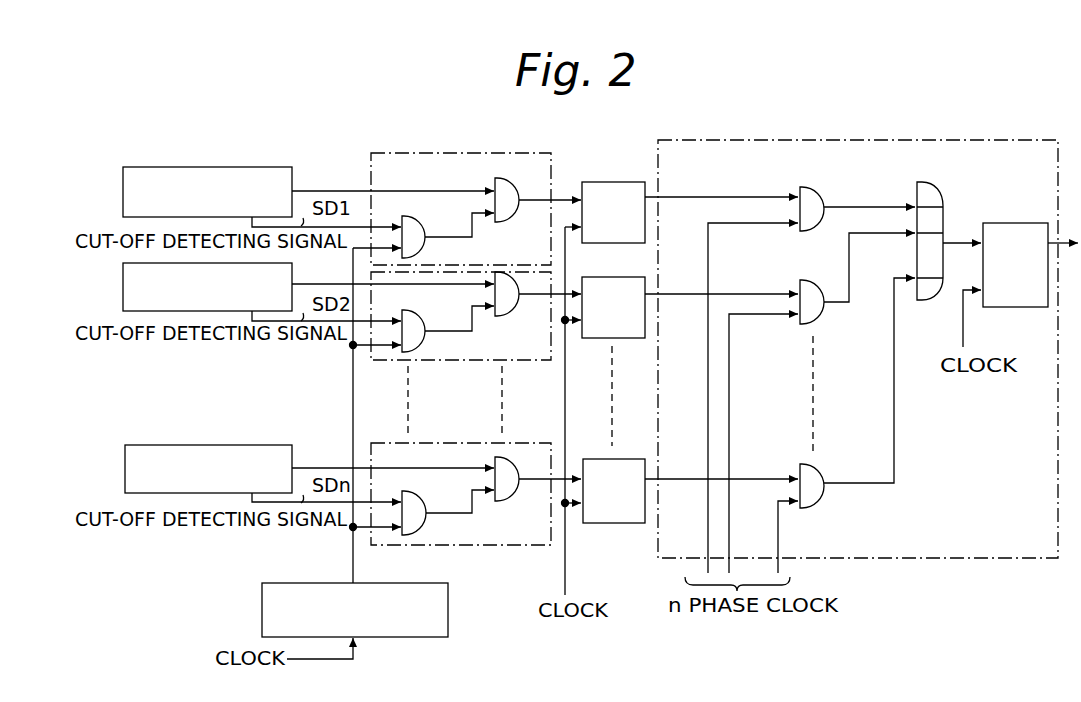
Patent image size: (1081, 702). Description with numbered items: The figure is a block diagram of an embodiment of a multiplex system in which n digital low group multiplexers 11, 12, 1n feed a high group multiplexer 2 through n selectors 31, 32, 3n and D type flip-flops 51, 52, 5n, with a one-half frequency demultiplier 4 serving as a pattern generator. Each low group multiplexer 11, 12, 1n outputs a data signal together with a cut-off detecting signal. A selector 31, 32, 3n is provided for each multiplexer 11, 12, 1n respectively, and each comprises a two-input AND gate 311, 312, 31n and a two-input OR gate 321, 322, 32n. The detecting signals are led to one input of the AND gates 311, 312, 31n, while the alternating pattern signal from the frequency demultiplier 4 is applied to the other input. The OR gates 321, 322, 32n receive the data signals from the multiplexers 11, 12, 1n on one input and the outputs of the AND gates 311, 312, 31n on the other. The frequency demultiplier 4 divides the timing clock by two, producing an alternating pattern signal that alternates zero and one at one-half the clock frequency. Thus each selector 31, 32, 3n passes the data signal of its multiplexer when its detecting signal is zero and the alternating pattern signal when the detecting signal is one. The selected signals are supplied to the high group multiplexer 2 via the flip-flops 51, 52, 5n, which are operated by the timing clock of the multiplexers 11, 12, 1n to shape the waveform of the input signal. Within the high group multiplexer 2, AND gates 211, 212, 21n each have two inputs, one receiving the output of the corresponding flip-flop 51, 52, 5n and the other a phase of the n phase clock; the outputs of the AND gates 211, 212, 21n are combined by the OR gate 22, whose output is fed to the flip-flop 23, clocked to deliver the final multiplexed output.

The high group multiplexer 2 is at (985, 140).
The ½ frequency demultiplier 4 is at (397, 583).
The digital low group multiplexer 11 is at (277, 167).
The digital low group multiplexer 12 is at (293, 276).
The digital low group multiplexer 1n is at (291, 445).
The selector 31 is at (492, 153).
The selector 32 is at (505, 362).
The selector 3n is at (512, 443).
The AND gate 311 is at (409, 218).
The AND gate 312 is at (410, 301).
The AND gate 31n is at (411, 494).
The OR gate 321 is at (490, 185).
The OR gate 322 is at (491, 294).
The OR gate 32n is at (494, 461).
The D type flip-flop 51 is at (595, 182).
The D type flip-flop 52 is at (601, 277).
The D type flip-flop 5n is at (619, 459).
The AND gate 211 is at (810, 187).
The AND gate 212 is at (803, 279).
The AND gate 21n is at (813, 465).
The OR gate 22 is at (928, 190).
The flip-flop 23 is at (1003, 223).